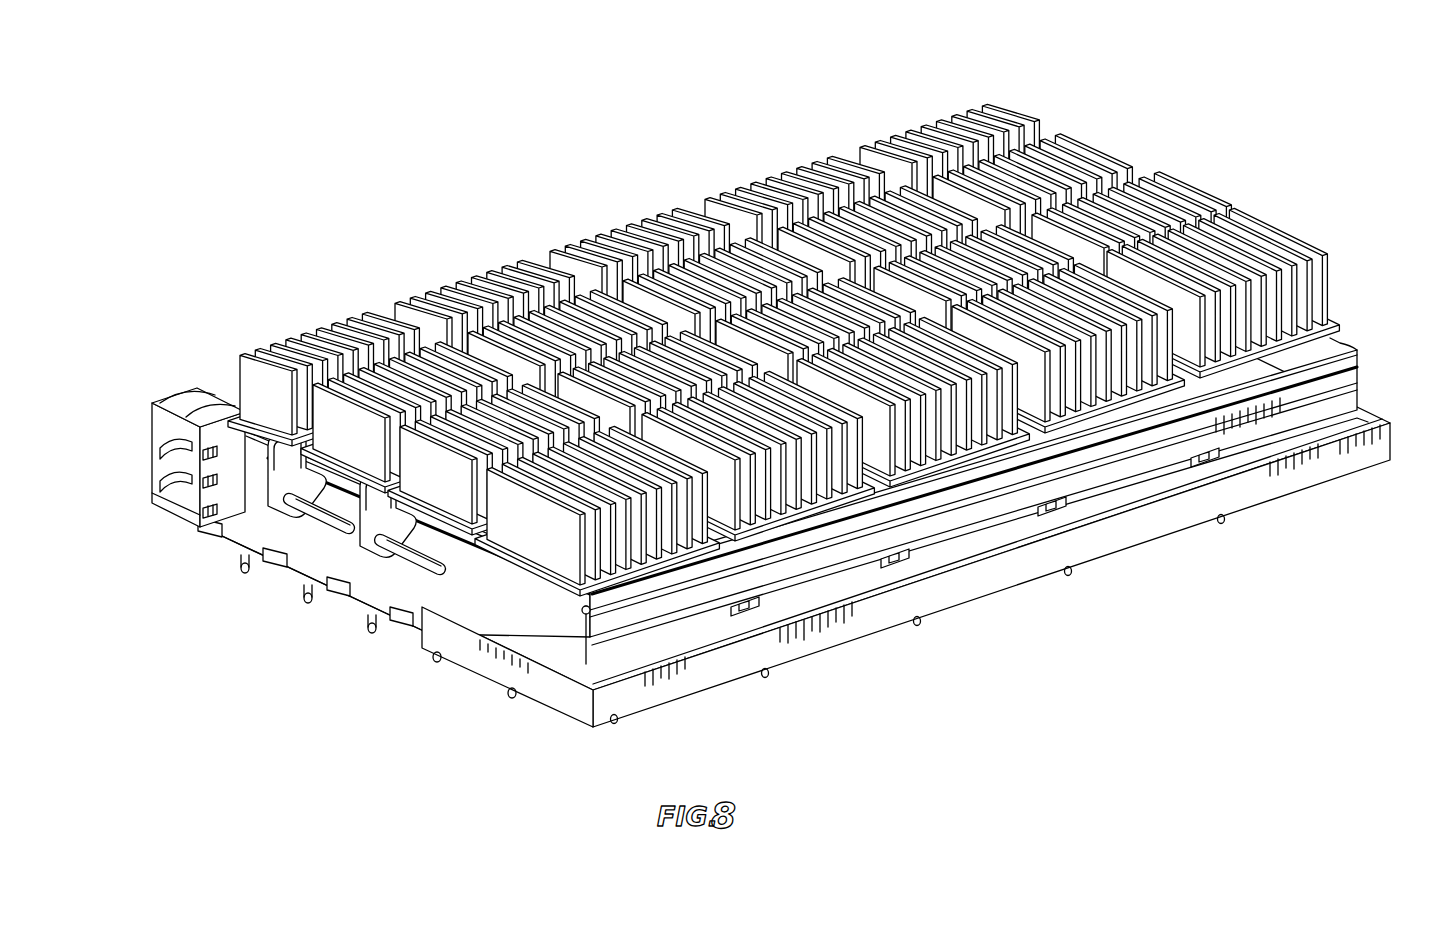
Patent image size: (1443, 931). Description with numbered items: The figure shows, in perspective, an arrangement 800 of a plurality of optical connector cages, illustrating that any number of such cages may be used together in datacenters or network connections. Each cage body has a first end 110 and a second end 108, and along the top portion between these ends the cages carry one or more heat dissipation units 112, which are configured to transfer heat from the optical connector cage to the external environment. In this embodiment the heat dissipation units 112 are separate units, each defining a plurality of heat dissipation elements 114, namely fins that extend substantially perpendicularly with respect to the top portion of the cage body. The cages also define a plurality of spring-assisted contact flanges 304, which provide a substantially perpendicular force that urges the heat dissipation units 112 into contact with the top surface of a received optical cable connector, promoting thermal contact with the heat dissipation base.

The heat sink assembly 800 is at (764, 401).
The second end 108 is at (762, 532).
The first end 110 is at (158, 392).
The heat dissipation units 112 is at (783, 335).
The heat dissipation elements 114 is at (1118, 212).
The spring-assisted contact flanges 304 is at (455, 538).